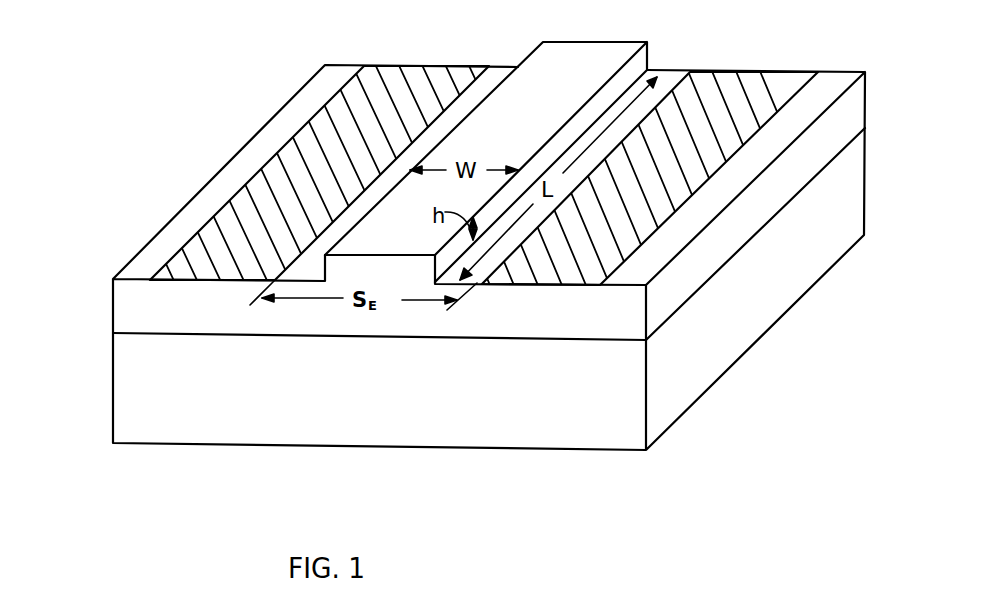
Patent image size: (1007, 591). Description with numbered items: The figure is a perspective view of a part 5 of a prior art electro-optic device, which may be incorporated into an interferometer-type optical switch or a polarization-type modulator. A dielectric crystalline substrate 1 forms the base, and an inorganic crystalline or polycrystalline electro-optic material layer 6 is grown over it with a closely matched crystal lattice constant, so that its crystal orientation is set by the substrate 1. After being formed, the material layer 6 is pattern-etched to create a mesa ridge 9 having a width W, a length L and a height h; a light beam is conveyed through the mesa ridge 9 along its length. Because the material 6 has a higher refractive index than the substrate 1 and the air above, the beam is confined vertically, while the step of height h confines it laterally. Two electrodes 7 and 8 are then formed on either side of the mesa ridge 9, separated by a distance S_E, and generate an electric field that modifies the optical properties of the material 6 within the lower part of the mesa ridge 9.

The dielectric crystalline substrate 1 is at (120, 436).
The part of a prior art electro-optic device 5 is at (66, 490).
The inorganic E/O material layer 6 is at (122, 326).
The electrode 7 is at (437, 73).
The electrode 8 is at (722, 73).
The mesa ridge 9 is at (312, 263).